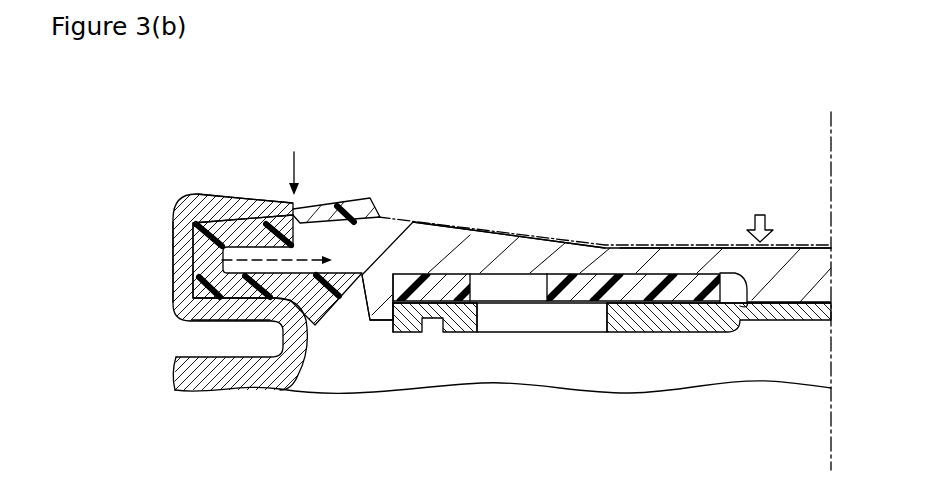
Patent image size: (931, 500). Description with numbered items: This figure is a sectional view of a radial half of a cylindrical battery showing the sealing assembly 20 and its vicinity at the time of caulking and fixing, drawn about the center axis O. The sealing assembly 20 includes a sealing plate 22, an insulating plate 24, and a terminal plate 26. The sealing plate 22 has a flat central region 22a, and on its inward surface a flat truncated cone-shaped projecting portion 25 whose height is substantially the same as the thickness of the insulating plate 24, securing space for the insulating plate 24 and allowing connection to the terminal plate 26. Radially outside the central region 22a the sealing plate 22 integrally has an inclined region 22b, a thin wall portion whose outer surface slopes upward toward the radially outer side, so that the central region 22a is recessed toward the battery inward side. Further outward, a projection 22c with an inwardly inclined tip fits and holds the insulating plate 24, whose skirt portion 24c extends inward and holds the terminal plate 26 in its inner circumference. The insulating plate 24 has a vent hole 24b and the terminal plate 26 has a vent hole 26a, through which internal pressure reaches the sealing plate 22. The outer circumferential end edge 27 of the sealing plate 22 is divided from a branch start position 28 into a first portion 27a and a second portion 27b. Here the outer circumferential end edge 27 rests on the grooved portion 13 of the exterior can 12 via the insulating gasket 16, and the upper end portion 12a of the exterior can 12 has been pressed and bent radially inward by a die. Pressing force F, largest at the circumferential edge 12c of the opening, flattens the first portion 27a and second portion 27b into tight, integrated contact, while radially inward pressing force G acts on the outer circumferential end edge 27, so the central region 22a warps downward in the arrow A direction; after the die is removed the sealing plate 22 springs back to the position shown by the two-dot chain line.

The exterior can 12 is at (168, 362).
The upper end portion 12a is at (172, 268).
The circumferential edge 12c is at (300, 210).
The grooved portion 13 is at (232, 318).
The gasket 16 is at (207, 222).
The sealing assembly 20 is at (526, 125).
The sealing plate 22 is at (433, 219).
The central region 22a is at (802, 249).
The inclined region 22b is at (519, 238).
The projection 22c is at (378, 323).
The insulating plate 24 is at (580, 312).
The vent hole 24b is at (493, 292).
The skirt portion 24c is at (410, 333).
The projecting portion 25 is at (780, 292).
The terminal plate 26 is at (663, 342).
The vent hole 26a is at (533, 322).
The outer circumferential end edge 27 is at (258, 232).
The first portion 27a is at (220, 250).
The second portion 27b is at (207, 282).
The branch start position 28 is at (263, 330).
The pressing force F is at (294, 159).
The radially inward pressing force G is at (286, 262).
The arrow A direction A is at (753, 220).
The center axis O is at (831, 279).